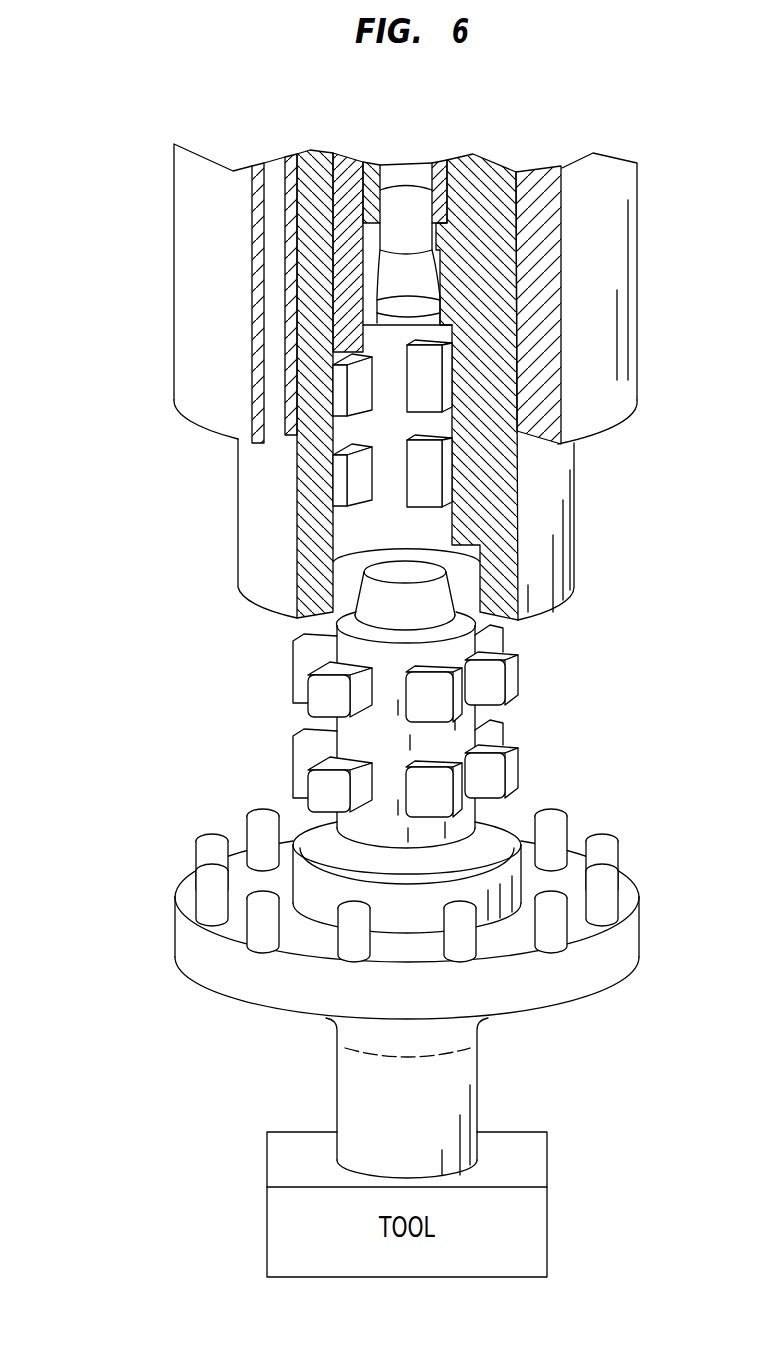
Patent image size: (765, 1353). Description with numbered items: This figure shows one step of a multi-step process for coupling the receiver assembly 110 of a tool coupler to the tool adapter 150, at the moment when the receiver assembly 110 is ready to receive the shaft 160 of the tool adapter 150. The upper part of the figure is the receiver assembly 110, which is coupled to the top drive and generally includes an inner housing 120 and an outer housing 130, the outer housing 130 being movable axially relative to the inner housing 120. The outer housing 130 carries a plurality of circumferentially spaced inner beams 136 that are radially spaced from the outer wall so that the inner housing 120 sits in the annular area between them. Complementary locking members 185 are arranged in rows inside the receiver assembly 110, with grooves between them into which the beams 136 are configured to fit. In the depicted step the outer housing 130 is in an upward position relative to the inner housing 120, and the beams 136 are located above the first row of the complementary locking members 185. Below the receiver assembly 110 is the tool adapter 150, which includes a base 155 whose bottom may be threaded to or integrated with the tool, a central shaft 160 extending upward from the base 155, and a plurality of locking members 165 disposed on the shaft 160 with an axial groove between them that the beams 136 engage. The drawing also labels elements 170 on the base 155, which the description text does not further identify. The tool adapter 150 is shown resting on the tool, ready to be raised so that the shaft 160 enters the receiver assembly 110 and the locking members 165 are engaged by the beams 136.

The receiver assembly 110 is at (160, 200).
The outer housing 130 is at (174, 308).
The inner housing 120 is at (238, 550).
The inner beams 136 is at (345, 190).
The complementary locking members 185 is at (343, 503).
The central shaft 160 is at (272, 752).
The locking members 165 is at (310, 697).
The tool adapter 150 is at (230, 1018).
The base 155 is at (549, 1004).
The bolts 170 is at (205, 888).